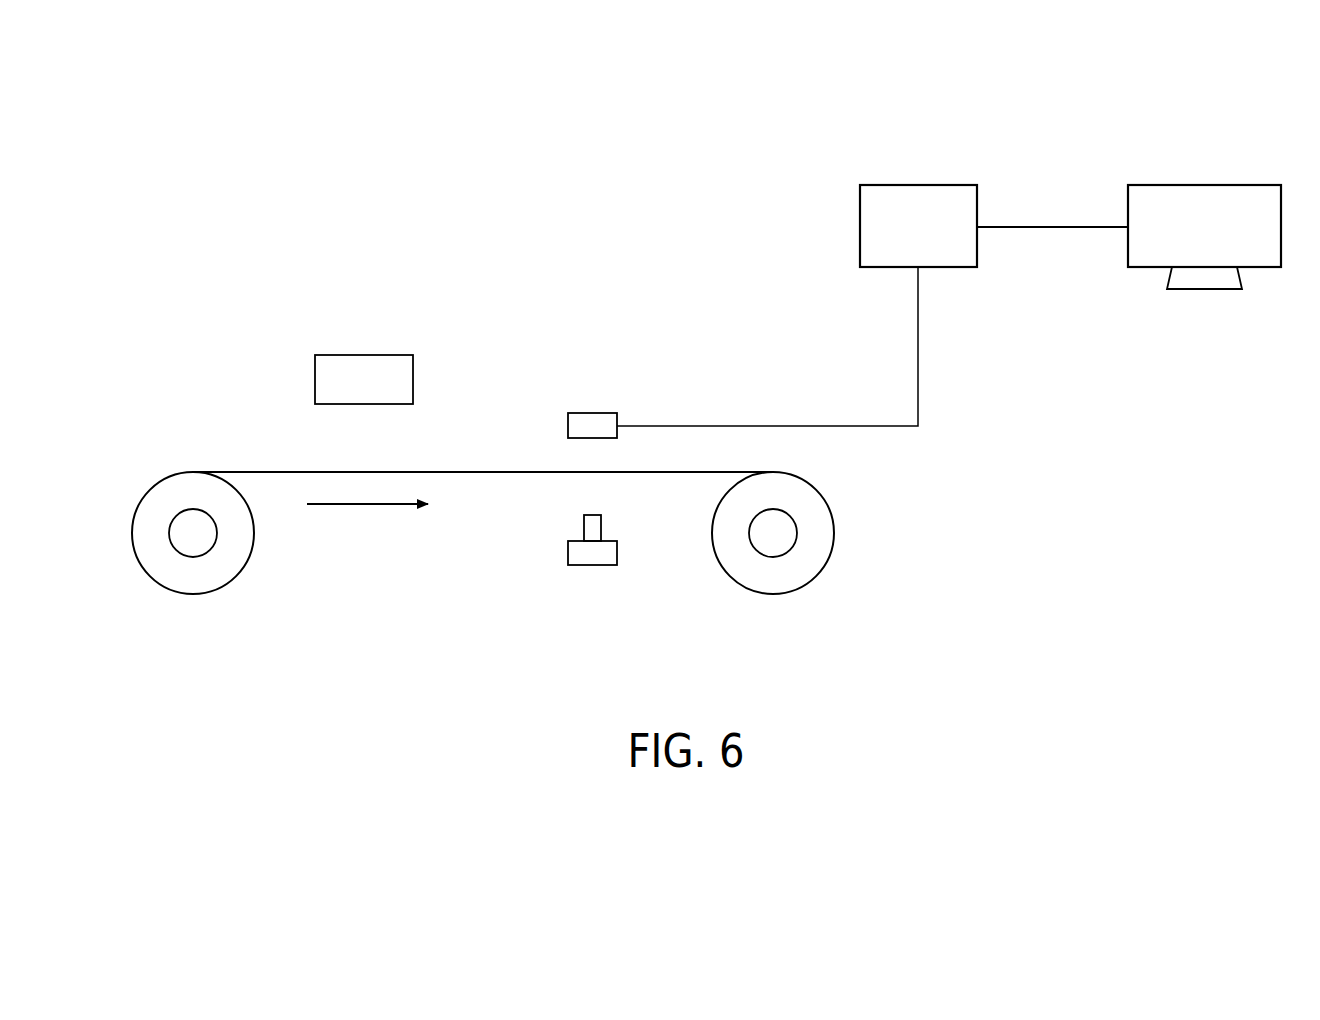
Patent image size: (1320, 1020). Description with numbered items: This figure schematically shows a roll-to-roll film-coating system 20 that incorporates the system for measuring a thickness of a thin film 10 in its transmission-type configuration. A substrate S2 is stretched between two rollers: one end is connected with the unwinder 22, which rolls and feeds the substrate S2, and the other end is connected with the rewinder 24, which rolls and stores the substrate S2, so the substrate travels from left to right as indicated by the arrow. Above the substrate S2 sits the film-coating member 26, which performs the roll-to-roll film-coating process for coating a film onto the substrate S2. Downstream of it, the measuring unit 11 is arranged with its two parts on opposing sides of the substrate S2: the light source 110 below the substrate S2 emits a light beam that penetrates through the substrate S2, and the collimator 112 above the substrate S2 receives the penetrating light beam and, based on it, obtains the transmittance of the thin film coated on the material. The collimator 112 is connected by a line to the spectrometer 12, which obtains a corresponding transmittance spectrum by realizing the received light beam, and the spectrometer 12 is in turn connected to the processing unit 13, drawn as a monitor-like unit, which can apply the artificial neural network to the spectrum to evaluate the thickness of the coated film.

The roll-to-roll film-coating system 20 is at (118, 143).
The system for measuring a thickness of a thin film 10 is at (630, 190).
The measuring unit 11 is at (513, 355).
The spectrometer 12 is at (885, 185).
The processing unit 13 is at (1166, 185).
The collimator 112 is at (581, 413).
The light source 110 is at (580, 560).
The film-coating member 26 is at (353, 355).
The substrate S2 is at (317, 472).
The unwinder 22 is at (204, 587).
The rewinder 24 is at (795, 583).